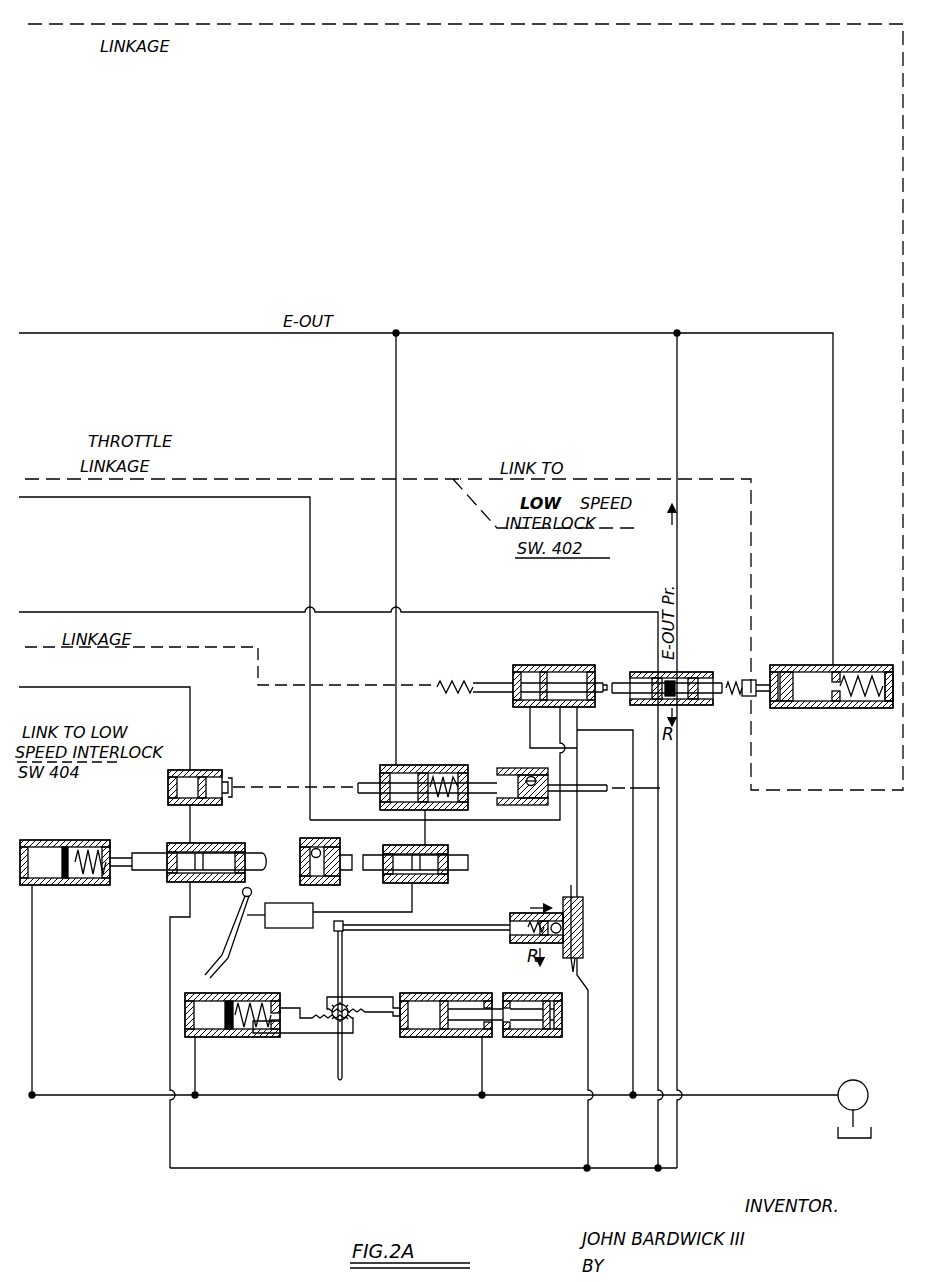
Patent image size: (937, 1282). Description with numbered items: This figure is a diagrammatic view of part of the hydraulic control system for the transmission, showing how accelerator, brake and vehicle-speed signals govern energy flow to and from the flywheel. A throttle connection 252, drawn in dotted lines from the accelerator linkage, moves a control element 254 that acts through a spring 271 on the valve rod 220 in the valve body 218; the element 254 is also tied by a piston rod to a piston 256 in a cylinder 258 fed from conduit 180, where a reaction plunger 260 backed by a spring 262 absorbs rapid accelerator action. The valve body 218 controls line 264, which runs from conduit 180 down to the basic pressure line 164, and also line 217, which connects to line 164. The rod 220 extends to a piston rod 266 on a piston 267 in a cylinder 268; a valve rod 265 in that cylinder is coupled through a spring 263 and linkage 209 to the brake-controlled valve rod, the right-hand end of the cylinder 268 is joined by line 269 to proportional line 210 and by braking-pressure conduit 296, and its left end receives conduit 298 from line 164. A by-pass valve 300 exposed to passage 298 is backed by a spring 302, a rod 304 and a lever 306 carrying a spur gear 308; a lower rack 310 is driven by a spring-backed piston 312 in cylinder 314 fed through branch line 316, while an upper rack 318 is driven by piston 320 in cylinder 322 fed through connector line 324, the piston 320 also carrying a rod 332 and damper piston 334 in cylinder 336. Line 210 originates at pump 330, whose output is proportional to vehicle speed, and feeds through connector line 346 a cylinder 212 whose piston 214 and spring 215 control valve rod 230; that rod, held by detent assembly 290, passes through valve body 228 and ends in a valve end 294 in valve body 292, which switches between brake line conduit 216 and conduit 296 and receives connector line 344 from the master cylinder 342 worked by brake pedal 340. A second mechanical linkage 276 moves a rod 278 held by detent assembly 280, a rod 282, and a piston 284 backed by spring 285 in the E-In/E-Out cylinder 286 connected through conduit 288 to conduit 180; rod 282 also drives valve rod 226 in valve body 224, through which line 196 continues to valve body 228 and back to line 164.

The basic pressure line 164 is at (222, 1170).
The conduit 180 is at (176, 333).
The line 196 is at (75, 687).
The linkage 209 is at (214, 647).
The conduit 210 is at (34, 1097).
The cylinder 212 is at (66, 885).
The piston 214 is at (62, 847).
The spring 215 is at (97, 885).
The brake line conduit 216 is at (53, 500).
The line 217 is at (45, 612).
The valve body 218 is at (690, 672).
The valve rod 220 is at (688, 705).
The valve body 224 is at (205, 770).
The valve rod 226 is at (232, 786).
The valve body 228 is at (205, 843).
The valve rod 230 is at (255, 850).
The throttle connection 252 is at (252, 479).
The control element 254 is at (745, 700).
The piston 256 is at (785, 708).
The cylinder 258 is at (795, 665).
The reaction plunger 260 is at (845, 670).
The spring 262 is at (880, 708).
The spring 263 is at (437, 686).
The line 264 is at (679, 412).
The valve rod 265 is at (478, 687).
The piston rod 266 is at (578, 672).
The piston 267 is at (545, 665).
The cylinder 268 is at (540, 670).
The line 269 is at (633, 802).
The spring 271 is at (738, 680).
The mechanical linkage 276 is at (345, 27).
The rod 278 is at (592, 787).
The detent assembly 280 is at (532, 770).
The rod 282 is at (482, 790).
The piston 284 is at (428, 765).
The spring 285 is at (440, 773).
The cylinder 286 is at (380, 772).
The conduit 288 is at (398, 420).
The detent assembly 290 is at (318, 840).
The valve body 292 is at (430, 883).
The valve end 294 is at (470, 868).
The conduit 296 is at (510, 820).
The conduit 298 is at (578, 875).
The by-pass valve 300 is at (558, 910).
The spring 302 is at (510, 942).
The rod 304 is at (435, 932).
The lever 306 is at (338, 962).
The spur gear 308 is at (350, 1022).
The rack 310 is at (315, 1034).
The piston 312 is at (238, 1001).
The cylinder 314 is at (228, 1037).
The branch line 316 is at (197, 1082).
The rack 318 is at (370, 997).
The piston 320 is at (444, 1030).
The cylinder 322 is at (458, 999).
The connector line 324 is at (482, 1070).
The pump 330 is at (848, 1089).
The rod 332 is at (510, 1037).
The damper piston 334 is at (548, 1037).
The cylinder 336 is at (552, 1001).
The brake pedal 340 is at (220, 955).
The master cylinder 342 is at (280, 924).
The connector line 344 is at (372, 908).
The connector line 346 is at (34, 985).